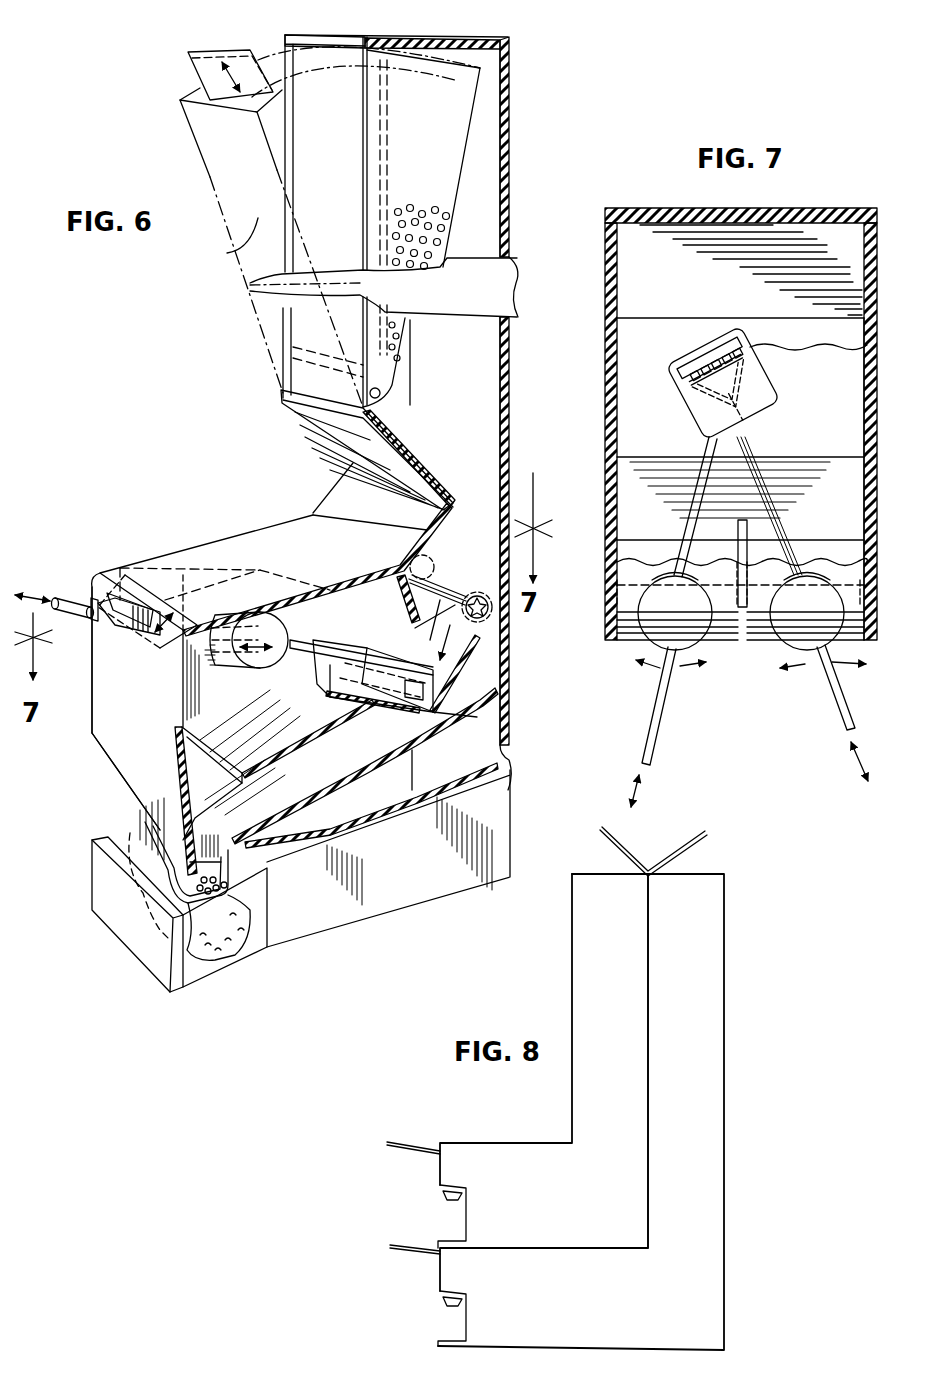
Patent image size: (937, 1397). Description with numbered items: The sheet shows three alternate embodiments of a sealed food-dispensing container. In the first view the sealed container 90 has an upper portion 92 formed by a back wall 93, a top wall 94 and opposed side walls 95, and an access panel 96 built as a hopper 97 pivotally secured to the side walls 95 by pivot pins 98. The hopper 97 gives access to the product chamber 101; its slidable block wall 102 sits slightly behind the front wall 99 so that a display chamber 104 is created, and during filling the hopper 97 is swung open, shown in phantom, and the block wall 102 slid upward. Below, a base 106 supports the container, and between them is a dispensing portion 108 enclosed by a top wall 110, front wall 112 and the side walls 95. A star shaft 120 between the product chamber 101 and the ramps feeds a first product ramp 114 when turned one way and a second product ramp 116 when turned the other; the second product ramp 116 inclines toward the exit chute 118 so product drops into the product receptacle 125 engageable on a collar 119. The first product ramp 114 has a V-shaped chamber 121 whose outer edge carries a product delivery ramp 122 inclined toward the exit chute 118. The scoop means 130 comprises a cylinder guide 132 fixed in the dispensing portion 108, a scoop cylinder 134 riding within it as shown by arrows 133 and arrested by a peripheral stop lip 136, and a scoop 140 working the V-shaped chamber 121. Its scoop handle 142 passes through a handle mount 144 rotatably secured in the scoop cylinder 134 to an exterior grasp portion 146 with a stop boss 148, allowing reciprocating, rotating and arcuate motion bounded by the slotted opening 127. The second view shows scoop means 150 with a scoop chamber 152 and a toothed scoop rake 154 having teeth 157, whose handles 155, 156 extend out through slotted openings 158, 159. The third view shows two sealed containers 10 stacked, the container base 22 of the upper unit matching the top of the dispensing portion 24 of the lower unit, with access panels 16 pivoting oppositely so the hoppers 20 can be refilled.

In FIG. 6, the sealed container 90 is at (516, 114).
In FIG. 6, the upper portion 92 is at (502, 159).
In FIG. 6, the back wall 93 is at (508, 198).
In FIG. 6, the top wall 94 is at (414, 34).
In FIG. 6, the side walls 95 is at (322, 36).
In FIG. 6, the access panel 96 is at (196, 145).
In FIG. 6, the hopper 97 is at (468, 95).
In FIG. 6, the pivot pins 98 is at (382, 396).
In FIG. 6, the front wall 99 is at (323, 232).
In FIG. 6, the product chamber 101 is at (466, 240).
In FIG. 6, the block wall 102 is at (200, 48).
In FIG. 6, the display chamber 104 is at (205, 98).
In FIG. 6, the base 106 is at (328, 935).
In FIG. 6, the dispensing portion 108 is at (150, 530).
In FIG. 7, the dispensing portion 108 is at (877, 525).
In FIG. 6, the top wall 110 is at (245, 540).
In FIG. 6, the front wall 112 is at (87, 720).
In FIG. 6, the first product ramp 114 is at (395, 620).
In FIG. 7, the first product ramp 114 is at (855, 415).
In FIG. 6, the second product ramp 116 is at (368, 850).
In FIG. 6, the exit chute 118 is at (120, 782).
In FIG. 6, the collar 119 is at (150, 830).
In FIG. 6, the star shaft 120 is at (437, 587).
In FIG. 6, the V-shaped chamber 121 is at (440, 610).
In FIG. 6, the product delivery ramp 122 is at (260, 738).
In FIG. 6, the product receptacle 125 is at (230, 880).
In FIG. 6, the slotted opening 127 is at (97, 590).
In FIG. 6, the scoop means 130 is at (95, 598).
In FIG. 6, the cylinder guide 132 is at (183, 570).
In FIG. 7, the cylinder guide 132 is at (622, 568).
In FIG. 6, the arrows 133 is at (230, 678).
In FIG. 6, the scoop cylinder 134 is at (110, 575).
In FIG. 7, the scoop cylinder 134 is at (622, 650).
In FIG. 6, the peripheral stop lip 136 is at (270, 580).
In FIG. 6, the scoop 140 is at (398, 698).
In FIG. 6, the scoop handle 142 is at (338, 694).
In FIG. 6, the handle mount 144 is at (150, 640).
In FIG. 6, the grasp portion 146 is at (58, 600).
In FIG. 6, the stop boss 148 is at (92, 628).
In FIG. 7, the scoop means 150 is at (768, 436).
In FIG. 7, the scoop chamber 152 is at (870, 347).
In FIG. 7, the scoop rake 154 is at (680, 406).
In FIG. 7, the handle 155 is at (786, 515).
In FIG. 7, the handle 156 is at (692, 512).
In FIG. 7, the teeth 157 is at (738, 362).
In FIG. 7, the slotted opening 158 is at (700, 648).
In FIG. 7, the slotted opening 159 is at (840, 655).
In FIG. 8, the sealed container 10 is at (570, 1202).
In FIG. 8, the access panels 16 is at (680, 835).
In FIG. 8, the hoppers 20 is at (614, 990).
In FIG. 8, the container base 22 is at (512, 1218).
In FIG. 8, the dispensing portion 24 is at (434, 1278).